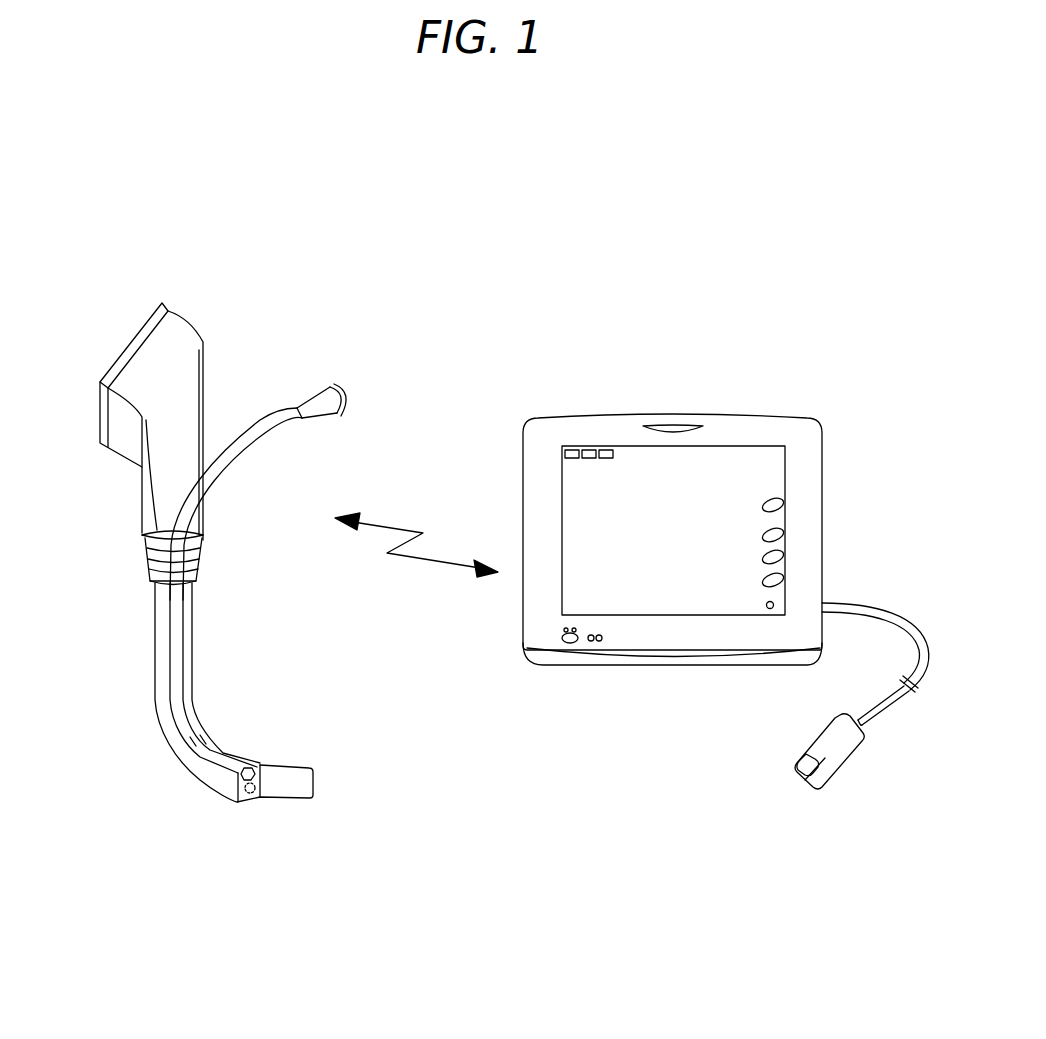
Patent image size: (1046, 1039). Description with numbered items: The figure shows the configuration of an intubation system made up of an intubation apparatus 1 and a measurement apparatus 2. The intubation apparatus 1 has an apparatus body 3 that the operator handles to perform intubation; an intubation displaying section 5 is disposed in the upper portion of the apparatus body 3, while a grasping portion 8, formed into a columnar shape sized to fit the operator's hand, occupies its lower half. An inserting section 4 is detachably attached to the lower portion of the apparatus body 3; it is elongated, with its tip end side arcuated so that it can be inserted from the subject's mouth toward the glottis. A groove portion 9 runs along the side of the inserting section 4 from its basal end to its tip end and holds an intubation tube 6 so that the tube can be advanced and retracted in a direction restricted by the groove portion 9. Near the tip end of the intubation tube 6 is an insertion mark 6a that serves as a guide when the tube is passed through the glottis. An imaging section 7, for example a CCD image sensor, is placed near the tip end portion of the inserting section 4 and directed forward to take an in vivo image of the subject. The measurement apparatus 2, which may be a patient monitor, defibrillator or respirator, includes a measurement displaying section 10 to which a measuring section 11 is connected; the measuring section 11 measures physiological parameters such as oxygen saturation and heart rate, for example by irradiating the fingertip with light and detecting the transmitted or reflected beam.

The intubation apparatus 1 is at (240, 312).
The measurement apparatus 2 is at (792, 382).
The apparatus body 3 is at (200, 348).
The inserting section 4 is at (193, 602).
The intubation displaying section 5 is at (122, 358).
The intubation tube 6 is at (252, 447).
The insertion mark 6a is at (202, 735).
The imaging section 7 is at (252, 794).
The grasping portion 8 is at (140, 506).
The groove portion 9 is at (167, 658).
The measurement displaying section 10 is at (745, 473).
The measuring section 11 is at (830, 747).